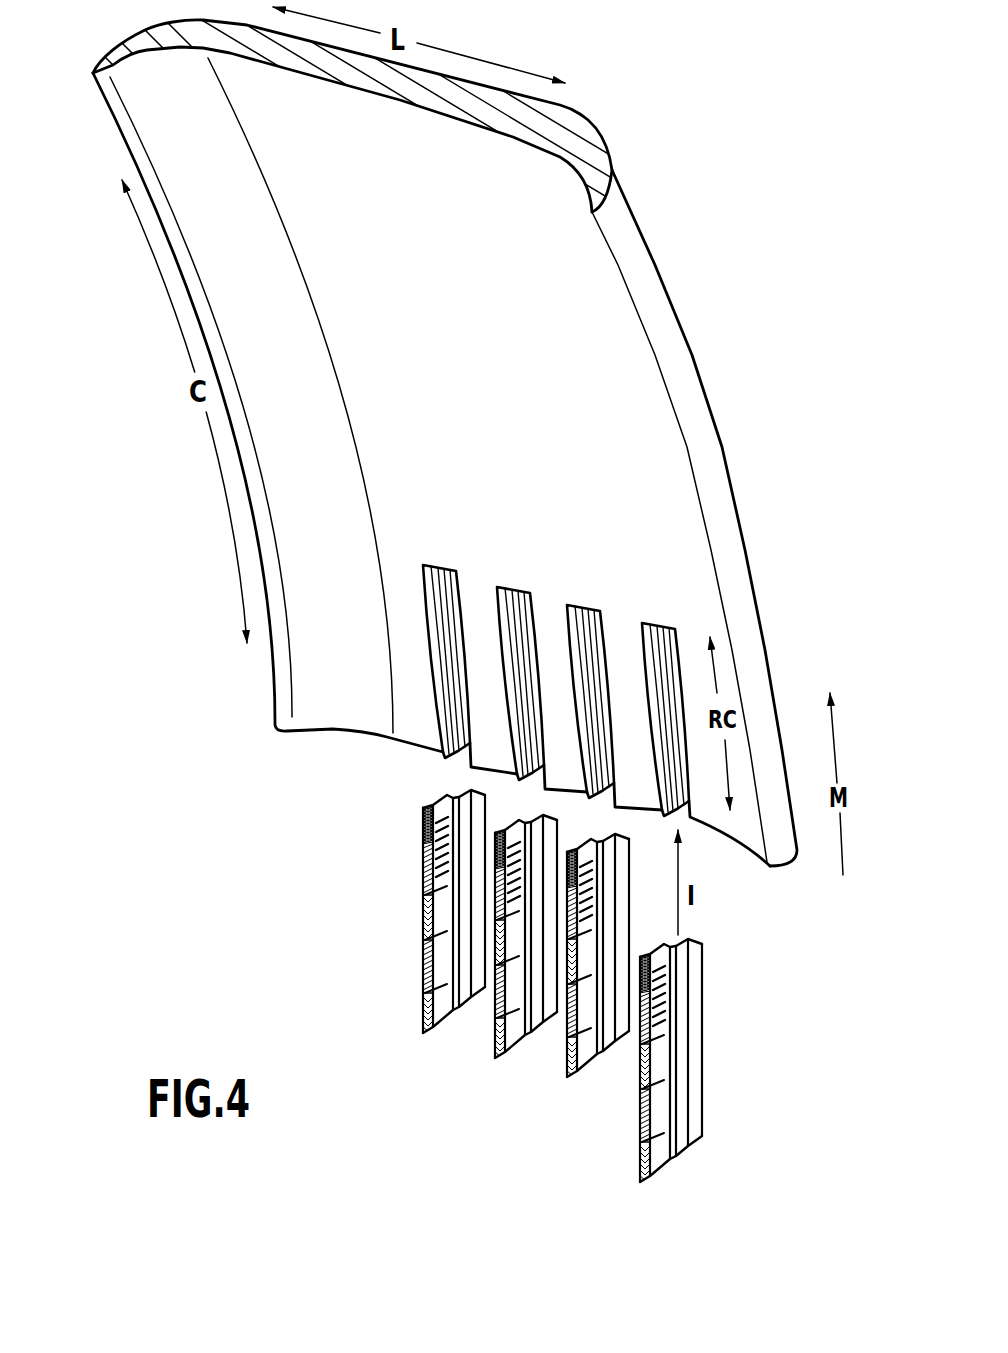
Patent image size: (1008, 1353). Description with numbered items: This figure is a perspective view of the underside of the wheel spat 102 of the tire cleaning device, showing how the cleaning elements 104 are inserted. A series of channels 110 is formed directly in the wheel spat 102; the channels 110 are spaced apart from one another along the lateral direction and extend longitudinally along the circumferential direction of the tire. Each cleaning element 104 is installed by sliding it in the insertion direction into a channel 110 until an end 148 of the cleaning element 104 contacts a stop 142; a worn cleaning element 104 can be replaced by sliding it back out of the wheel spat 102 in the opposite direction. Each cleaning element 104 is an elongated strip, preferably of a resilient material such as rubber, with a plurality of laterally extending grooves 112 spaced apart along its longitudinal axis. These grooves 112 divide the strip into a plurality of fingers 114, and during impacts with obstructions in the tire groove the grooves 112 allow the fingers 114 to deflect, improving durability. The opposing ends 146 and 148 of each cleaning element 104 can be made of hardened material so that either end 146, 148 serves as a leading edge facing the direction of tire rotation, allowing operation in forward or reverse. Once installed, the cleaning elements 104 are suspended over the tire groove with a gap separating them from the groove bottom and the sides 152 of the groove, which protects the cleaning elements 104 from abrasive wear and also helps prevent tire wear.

The wheel spat 102 is at (650, 267).
The cleaning element 104 is at (463, 1001).
The channel 110 is at (444, 590).
The laterally extending groove 112 is at (417, 942).
The finger 114 is at (445, 970).
The stop 142 is at (424, 560).
The end of cleaning element 146 is at (414, 1041).
The end of cleaning element 148 is at (412, 805).
The groove side 152 is at (500, 136).